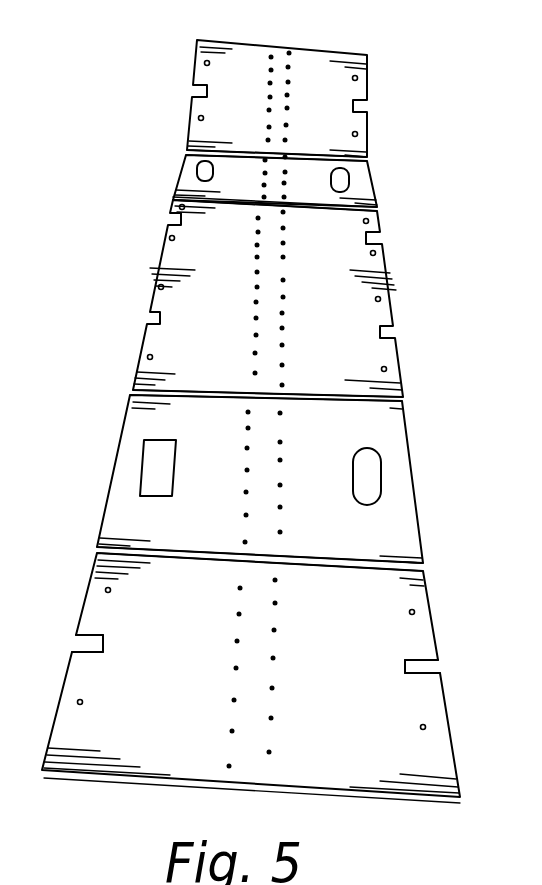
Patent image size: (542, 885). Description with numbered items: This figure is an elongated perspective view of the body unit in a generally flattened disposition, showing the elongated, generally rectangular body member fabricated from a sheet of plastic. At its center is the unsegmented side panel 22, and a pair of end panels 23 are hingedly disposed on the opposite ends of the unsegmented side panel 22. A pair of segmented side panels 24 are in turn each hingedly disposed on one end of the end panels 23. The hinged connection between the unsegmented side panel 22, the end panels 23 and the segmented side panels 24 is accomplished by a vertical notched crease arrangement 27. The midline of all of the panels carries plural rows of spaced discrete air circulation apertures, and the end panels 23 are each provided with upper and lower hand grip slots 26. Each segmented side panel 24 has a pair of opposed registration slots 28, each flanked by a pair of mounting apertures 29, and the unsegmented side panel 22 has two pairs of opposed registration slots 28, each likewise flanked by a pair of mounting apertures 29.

The unsegmented side panel 22 is at (300, 345).
The end panel 23 is at (360, 190).
The segmented side panel 24 is at (325, 63).
The hand grip slot 26 is at (198, 168).
The vertical notched crease arrangement 27 is at (292, 156).
The registration slot 28 is at (75, 648).
The mounting aperture 29 is at (105, 590).